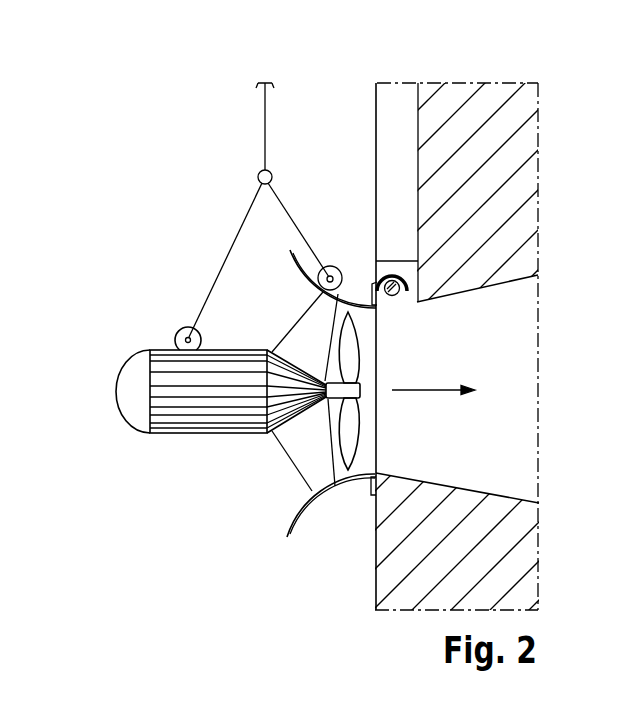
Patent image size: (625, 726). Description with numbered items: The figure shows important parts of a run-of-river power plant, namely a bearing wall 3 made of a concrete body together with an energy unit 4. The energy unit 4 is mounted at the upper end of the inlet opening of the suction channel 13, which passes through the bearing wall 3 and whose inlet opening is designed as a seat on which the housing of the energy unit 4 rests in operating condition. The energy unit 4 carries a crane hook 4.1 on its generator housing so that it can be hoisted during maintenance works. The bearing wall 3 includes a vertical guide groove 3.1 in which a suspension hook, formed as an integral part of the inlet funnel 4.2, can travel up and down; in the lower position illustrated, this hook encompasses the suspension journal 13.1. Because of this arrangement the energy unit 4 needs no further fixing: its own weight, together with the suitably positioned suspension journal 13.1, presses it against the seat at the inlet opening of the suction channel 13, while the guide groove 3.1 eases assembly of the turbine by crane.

The bearing wall 3 is at (498, 92).
The vertical guide groove 3.1 is at (377, 132).
The energy unit 4 is at (98, 336).
The crane hook 4.1 is at (184, 330).
The inlet funnel 4.2 is at (291, 516).
The suction channel 13 is at (519, 404).
The suspension journal 13.1 is at (394, 306).